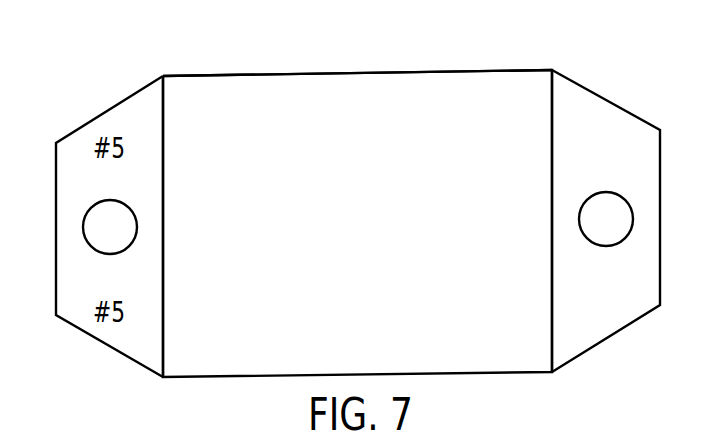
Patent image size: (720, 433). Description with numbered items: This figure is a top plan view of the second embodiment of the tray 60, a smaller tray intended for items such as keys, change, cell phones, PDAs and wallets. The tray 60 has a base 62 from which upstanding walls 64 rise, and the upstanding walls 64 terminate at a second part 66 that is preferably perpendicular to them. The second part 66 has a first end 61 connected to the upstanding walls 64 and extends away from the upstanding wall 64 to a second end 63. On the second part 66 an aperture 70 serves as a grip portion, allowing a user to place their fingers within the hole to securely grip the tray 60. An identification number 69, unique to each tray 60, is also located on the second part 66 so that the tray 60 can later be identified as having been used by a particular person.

The second embodiment tray 60 is at (512, 70).
The first end 61 is at (163, 76).
The base 62 is at (362, 85).
The second end 63 is at (107, 108).
The upstanding walls 64 is at (307, 73).
The second part 66 is at (583, 86).
The identification number 69 is at (603, 108).
The aperture 70 is at (90, 226).